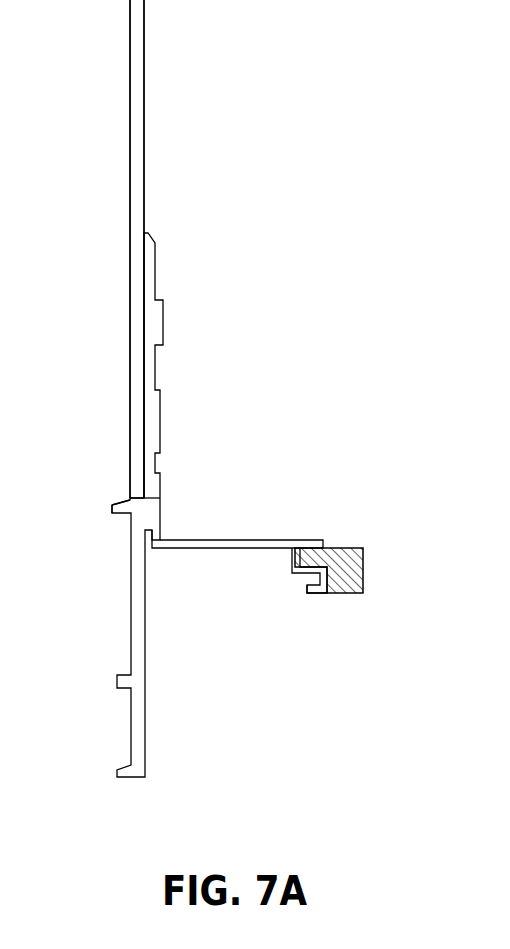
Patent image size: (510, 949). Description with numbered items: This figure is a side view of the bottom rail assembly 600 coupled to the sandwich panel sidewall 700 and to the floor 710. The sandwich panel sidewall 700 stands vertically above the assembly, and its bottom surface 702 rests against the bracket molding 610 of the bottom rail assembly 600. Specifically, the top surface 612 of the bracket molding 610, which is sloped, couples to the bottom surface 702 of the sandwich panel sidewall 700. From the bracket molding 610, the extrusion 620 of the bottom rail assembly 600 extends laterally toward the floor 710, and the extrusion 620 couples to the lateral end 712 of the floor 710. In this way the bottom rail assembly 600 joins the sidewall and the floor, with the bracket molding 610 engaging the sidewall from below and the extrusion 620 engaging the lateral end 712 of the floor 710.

The sandwich panel sidewall 700 is at (181, 249).
The bottom rail assembly 600 is at (172, 505).
The bottom surface 702 is at (195, 451).
The top surface 612 is at (81, 463).
The bracket molding 610 is at (75, 488).
The extrusion 620 is at (239, 561).
The floor 710 is at (310, 548).
The lateral end 712 is at (285, 616).